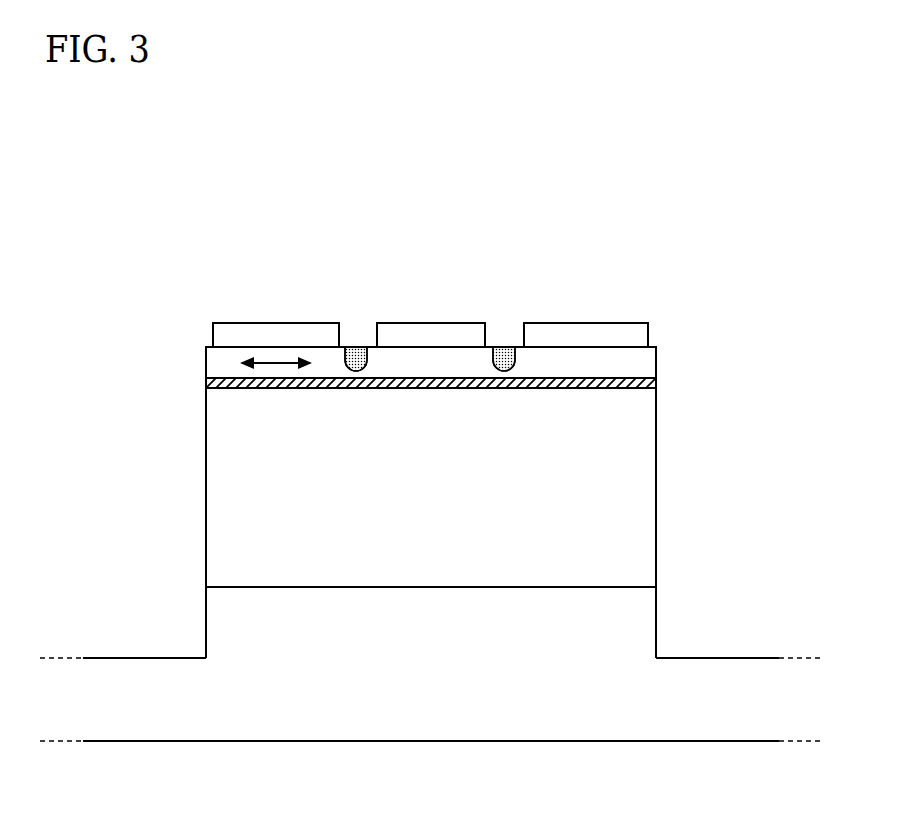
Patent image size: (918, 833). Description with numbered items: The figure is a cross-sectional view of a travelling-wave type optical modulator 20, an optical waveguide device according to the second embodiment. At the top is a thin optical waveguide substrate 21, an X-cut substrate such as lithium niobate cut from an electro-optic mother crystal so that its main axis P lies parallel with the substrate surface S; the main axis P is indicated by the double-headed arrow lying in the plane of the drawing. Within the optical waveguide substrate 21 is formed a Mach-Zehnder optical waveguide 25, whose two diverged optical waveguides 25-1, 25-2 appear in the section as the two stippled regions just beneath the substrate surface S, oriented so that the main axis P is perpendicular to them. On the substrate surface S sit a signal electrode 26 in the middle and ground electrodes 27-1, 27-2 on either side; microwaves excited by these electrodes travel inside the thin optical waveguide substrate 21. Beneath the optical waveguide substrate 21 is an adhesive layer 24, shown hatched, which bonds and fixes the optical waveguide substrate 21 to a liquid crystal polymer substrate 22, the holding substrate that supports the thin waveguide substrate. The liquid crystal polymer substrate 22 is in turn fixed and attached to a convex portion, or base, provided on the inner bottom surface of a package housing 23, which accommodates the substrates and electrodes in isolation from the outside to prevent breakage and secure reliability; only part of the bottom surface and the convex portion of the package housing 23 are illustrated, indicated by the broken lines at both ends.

The travelling-wave type optical modulator 20 is at (655, 204).
The optical waveguide substrate 21 is at (650, 363).
The liquid crystal polymer substrate 22 is at (640, 478).
The package housing 23 is at (714, 658).
The adhesive layer 24 is at (652, 383).
The Mach-Zehnder optical waveguide 25 is at (430, 359).
The diverged optical waveguide 25-1 is at (356, 347).
The diverged optical waveguide 25-2 is at (503, 347).
The signal electrode 26 is at (432, 335).
The ground electrode 27-1 is at (299, 335).
The ground electrode 27-2 is at (582, 335).
The substrate surface S is at (235, 347).
The main axis P is at (276, 362).